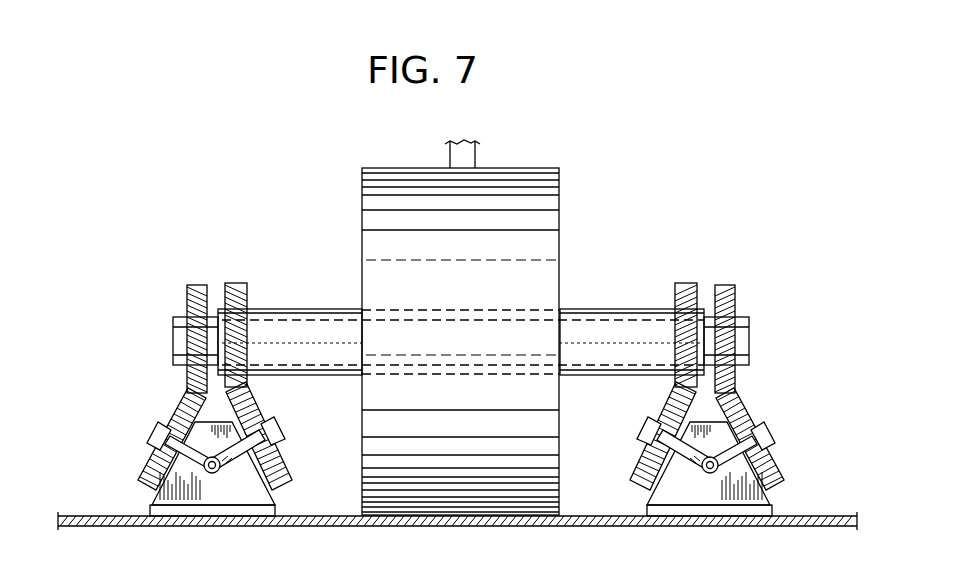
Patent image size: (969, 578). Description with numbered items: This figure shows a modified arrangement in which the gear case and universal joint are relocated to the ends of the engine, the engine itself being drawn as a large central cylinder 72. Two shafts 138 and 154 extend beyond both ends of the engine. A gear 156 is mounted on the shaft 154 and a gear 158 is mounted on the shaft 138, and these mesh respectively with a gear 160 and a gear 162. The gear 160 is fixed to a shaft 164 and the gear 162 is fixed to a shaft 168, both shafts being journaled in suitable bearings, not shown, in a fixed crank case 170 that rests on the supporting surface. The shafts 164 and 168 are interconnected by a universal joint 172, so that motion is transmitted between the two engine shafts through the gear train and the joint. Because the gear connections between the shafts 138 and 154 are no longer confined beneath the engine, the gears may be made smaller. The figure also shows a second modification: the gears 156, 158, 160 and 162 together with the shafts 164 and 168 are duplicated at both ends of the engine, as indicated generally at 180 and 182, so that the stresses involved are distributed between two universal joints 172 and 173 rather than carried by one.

The drum 72 is at (468, 160).
The shaft 138 is at (306, 311).
The shaft 154 is at (289, 374).
The gear 156 is at (188, 290).
The gear 158 is at (233, 285).
The gear 160 is at (184, 406).
The gear 162 is at (285, 458).
The shaft 164 is at (158, 434).
The shaft 168 is at (278, 430).
The crank case 170 is at (205, 500).
The universal joint 172 is at (218, 471).
The universal joint 173 is at (709, 473).
The duplicated gear and shaft arrangement 180 is at (756, 407).
The duplicated gear and shaft arrangement 182 is at (664, 393).